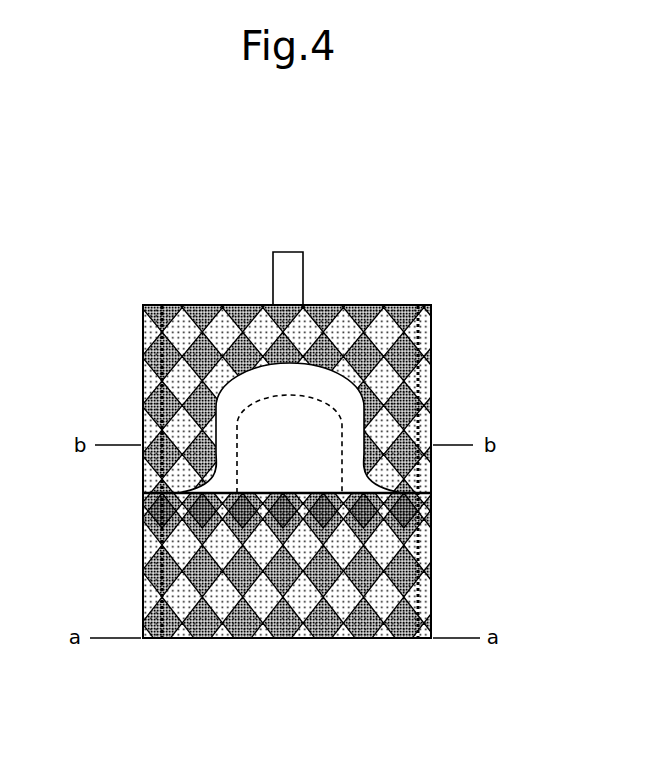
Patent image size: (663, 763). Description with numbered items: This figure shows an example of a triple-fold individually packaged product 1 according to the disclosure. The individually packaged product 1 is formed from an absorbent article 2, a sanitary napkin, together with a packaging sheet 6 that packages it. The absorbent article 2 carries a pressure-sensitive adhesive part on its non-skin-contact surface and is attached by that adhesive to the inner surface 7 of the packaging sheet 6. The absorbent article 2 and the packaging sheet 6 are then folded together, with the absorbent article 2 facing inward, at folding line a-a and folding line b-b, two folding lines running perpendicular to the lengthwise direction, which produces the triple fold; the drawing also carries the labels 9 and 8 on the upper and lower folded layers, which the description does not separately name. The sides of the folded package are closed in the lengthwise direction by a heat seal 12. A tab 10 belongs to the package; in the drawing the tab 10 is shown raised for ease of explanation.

The individually packaged product 1 is at (154, 253).
The absorbent article 2 is at (333, 390).
The packaging sheet 6 is at (434, 321).
The inner surface 7 is at (402, 403).
The lower base member 8 is at (383, 543).
The upper body member 9 is at (173, 332).
The tab 10 is at (287, 275).
The heat seal 12 is at (141, 579).